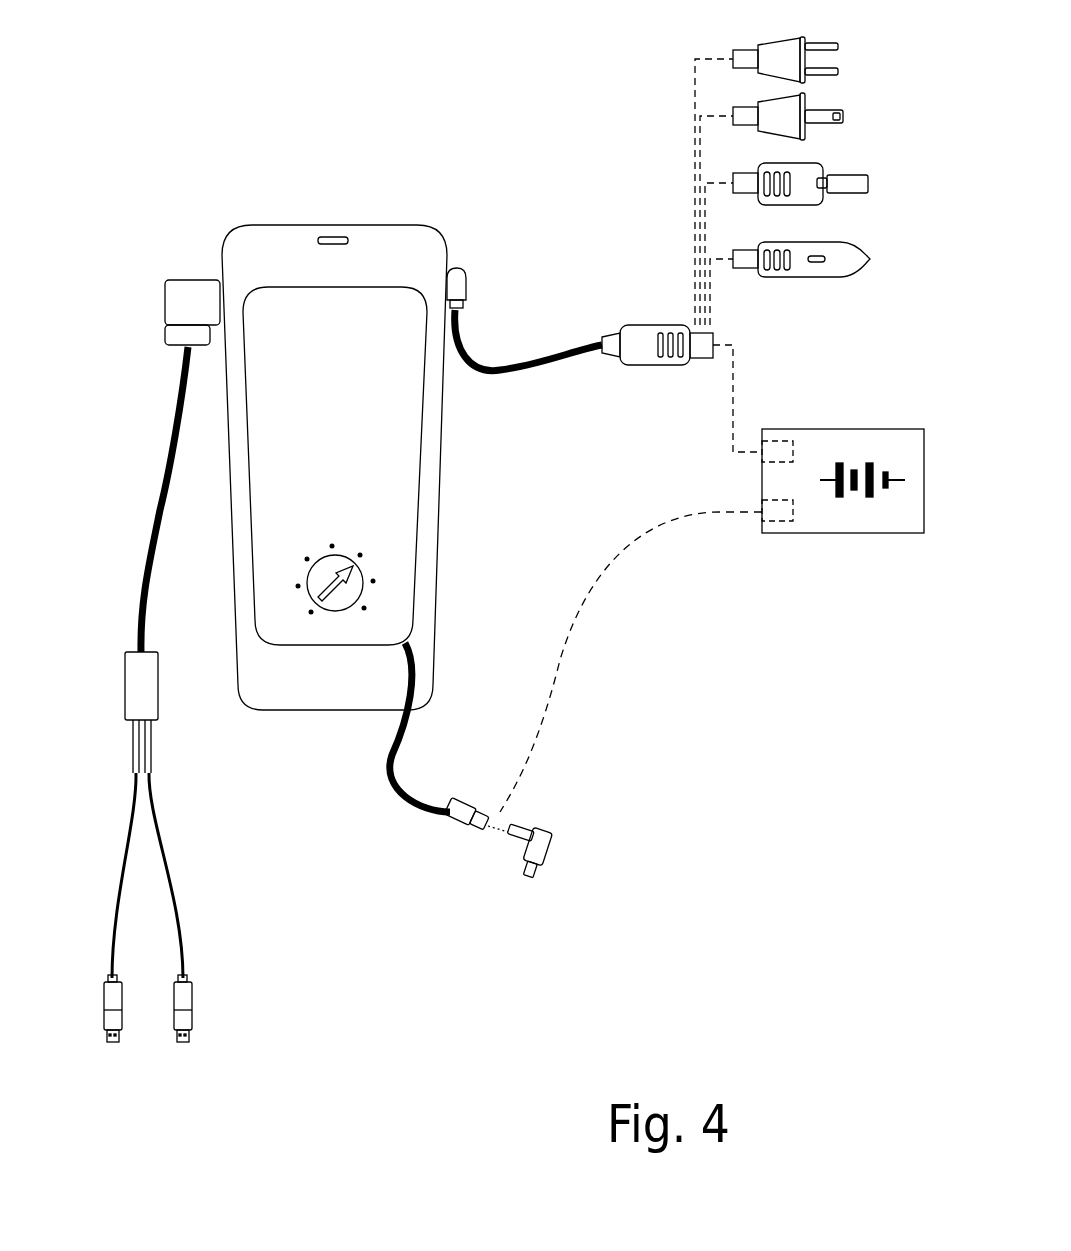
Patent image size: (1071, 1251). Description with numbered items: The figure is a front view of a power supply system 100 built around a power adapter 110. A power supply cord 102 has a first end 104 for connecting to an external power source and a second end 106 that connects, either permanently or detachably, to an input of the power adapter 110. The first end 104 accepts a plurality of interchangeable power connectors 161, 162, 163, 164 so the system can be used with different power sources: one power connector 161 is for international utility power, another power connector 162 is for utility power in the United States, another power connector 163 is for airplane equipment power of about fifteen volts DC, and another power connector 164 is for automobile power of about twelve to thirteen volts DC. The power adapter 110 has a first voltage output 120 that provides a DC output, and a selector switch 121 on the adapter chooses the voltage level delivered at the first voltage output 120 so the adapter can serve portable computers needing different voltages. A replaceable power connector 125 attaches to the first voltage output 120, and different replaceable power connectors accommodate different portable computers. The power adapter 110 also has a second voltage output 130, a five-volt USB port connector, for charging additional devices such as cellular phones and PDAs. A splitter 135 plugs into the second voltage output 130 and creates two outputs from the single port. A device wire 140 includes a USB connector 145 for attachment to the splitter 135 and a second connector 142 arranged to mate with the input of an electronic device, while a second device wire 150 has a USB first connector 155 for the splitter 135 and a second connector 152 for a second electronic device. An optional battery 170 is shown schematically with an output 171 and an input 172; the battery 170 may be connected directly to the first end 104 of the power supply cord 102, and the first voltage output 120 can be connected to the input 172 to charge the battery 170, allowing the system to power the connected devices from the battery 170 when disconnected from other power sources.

The power supply system 100 is at (526, 158).
The power adapter 110 is at (432, 220).
The selector switch 121 is at (343, 612).
The second voltage output 130 is at (218, 282).
The splitter 135 is at (163, 473).
The first connector 155 is at (133, 742).
The connector 145 is at (152, 742).
The second device wire 150 is at (120, 866).
The device wire 140 is at (172, 866).
The second connector 152 is at (105, 1000).
The second connector 142 is at (192, 1000).
The second end 106 is at (457, 307).
The power supply cord 102 is at (470, 377).
The first end 104 is at (640, 353).
The power connector 161 is at (805, 36).
The power connector 162 is at (805, 93).
The power connector 163 is at (780, 163).
The power connector 164 is at (782, 242).
The battery 170 is at (845, 429).
The output port 171 is at (793, 452).
The input 172 is at (793, 511).
The first voltage output 120 is at (396, 745).
The replaceable power connector 125 is at (549, 840).